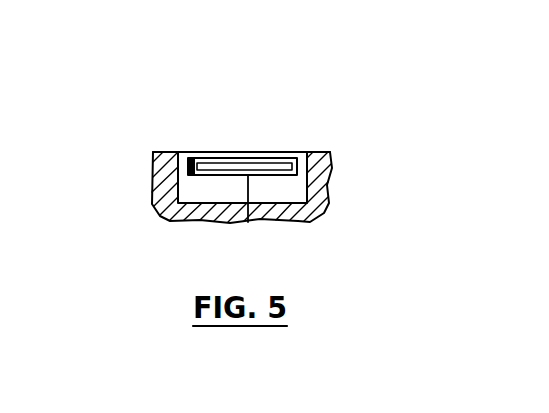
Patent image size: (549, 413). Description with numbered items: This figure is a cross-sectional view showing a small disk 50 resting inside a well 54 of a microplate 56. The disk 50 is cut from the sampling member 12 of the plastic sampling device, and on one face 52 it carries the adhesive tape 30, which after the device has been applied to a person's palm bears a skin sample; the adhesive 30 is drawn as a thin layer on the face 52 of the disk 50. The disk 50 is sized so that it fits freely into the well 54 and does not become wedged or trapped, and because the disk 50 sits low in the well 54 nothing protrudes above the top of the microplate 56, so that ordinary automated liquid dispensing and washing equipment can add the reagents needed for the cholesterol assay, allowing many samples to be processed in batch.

The sampling member 12 is at (165, 184).
The adhesive tape 30 is at (188, 168).
The disk 50 is at (287, 150).
The face 52 is at (248, 222).
The well 54 is at (198, 192).
The microplate 56 is at (170, 152).